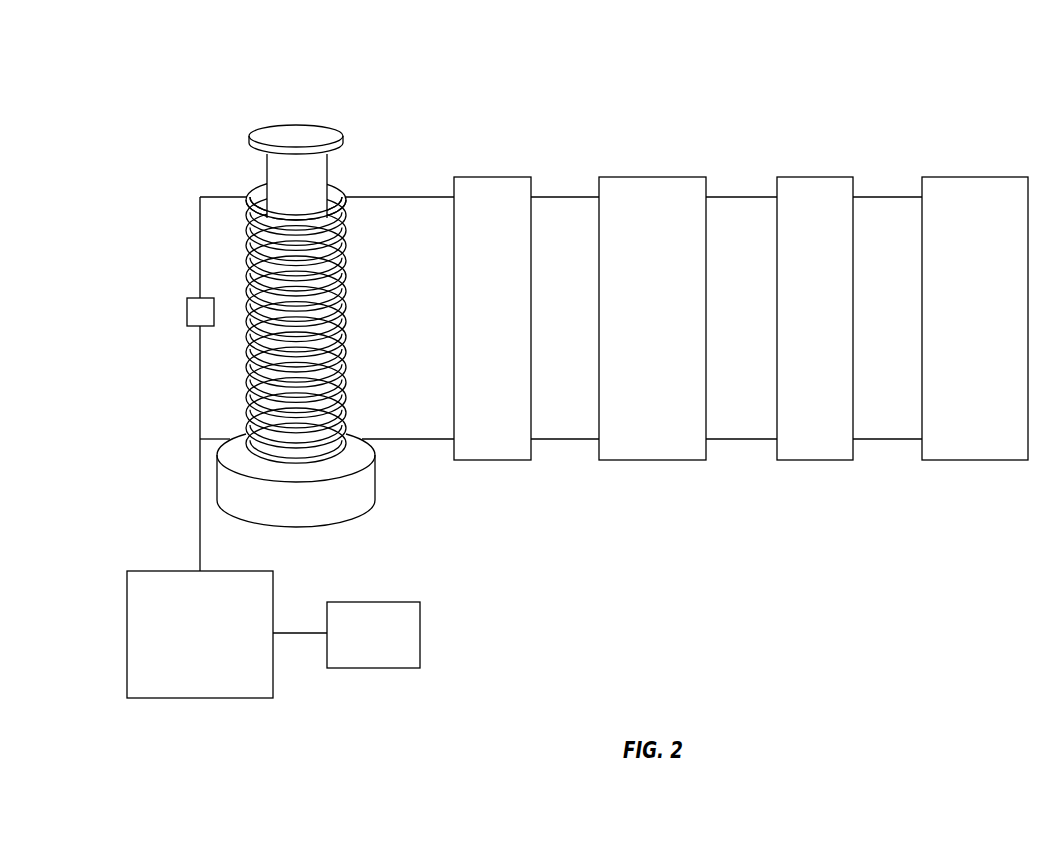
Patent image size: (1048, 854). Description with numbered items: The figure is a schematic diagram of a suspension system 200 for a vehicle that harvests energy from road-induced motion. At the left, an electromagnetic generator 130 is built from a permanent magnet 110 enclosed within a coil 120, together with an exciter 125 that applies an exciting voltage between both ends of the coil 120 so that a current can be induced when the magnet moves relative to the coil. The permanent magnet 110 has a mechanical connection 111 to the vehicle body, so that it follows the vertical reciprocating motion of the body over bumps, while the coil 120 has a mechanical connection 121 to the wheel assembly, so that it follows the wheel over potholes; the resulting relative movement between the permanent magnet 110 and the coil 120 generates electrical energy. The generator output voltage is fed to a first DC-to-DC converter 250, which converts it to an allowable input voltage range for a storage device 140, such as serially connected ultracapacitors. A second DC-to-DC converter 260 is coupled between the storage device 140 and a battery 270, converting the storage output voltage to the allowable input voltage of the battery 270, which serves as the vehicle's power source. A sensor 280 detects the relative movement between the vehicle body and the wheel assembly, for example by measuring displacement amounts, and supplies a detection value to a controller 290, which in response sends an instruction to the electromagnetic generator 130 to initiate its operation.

The system 200 is at (681, 39).
The permanent magnet 110 is at (278, 166).
The mechanical connection 111 is at (306, 122).
The coil 120 is at (243, 379).
The mechanical connection 121 is at (347, 503).
The exciter 125 is at (187, 315).
The electromagnetic generator 130 is at (108, 378).
The storage device 140 is at (662, 460).
The DC-to-DC converter 250 is at (495, 460).
The DC-to-DC converter 260 is at (823, 460).
The battery 270 is at (975, 460).
The sensor 280 is at (377, 668).
The controller 290 is at (210, 698).